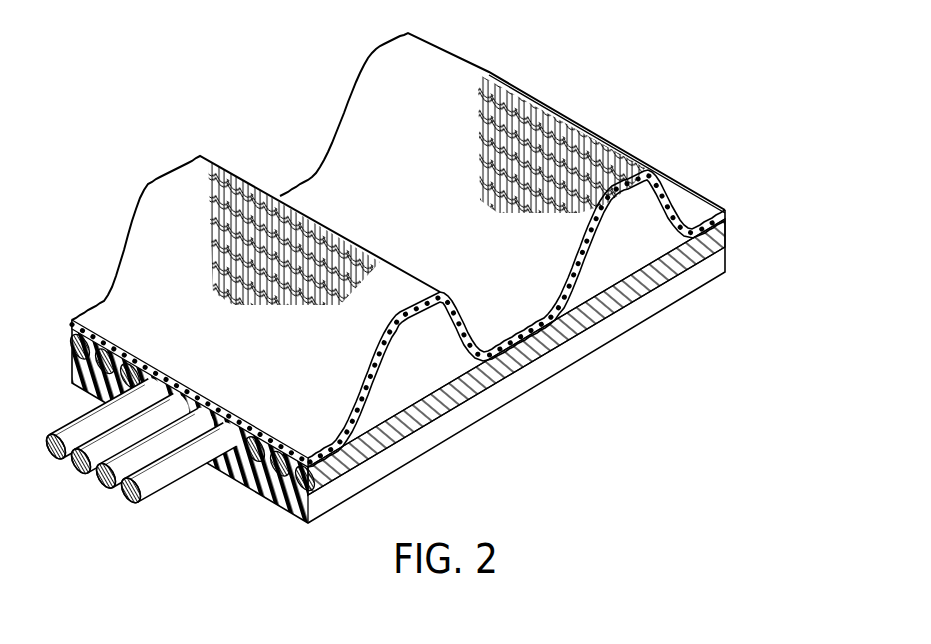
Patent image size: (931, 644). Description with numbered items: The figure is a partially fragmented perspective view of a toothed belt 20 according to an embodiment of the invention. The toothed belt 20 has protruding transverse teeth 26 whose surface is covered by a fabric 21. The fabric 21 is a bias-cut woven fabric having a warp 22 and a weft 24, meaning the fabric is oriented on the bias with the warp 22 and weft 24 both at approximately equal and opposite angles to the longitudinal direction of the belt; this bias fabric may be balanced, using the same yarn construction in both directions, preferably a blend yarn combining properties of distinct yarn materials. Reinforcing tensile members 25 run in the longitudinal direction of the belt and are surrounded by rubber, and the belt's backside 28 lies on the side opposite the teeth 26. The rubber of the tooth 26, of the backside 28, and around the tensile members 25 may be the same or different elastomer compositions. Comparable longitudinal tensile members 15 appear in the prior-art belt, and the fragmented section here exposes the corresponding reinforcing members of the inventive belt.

The reinforcing tensile members 15 is at (183, 477).
The toothed belt 20 is at (660, 46).
The fabric 21 is at (713, 222).
The warp 22 is at (500, 205).
The weft 24 is at (485, 102).
The reinforcing tensile members 25 is at (648, 280).
The teeth 26 is at (423, 372).
The backside 28 is at (565, 357).